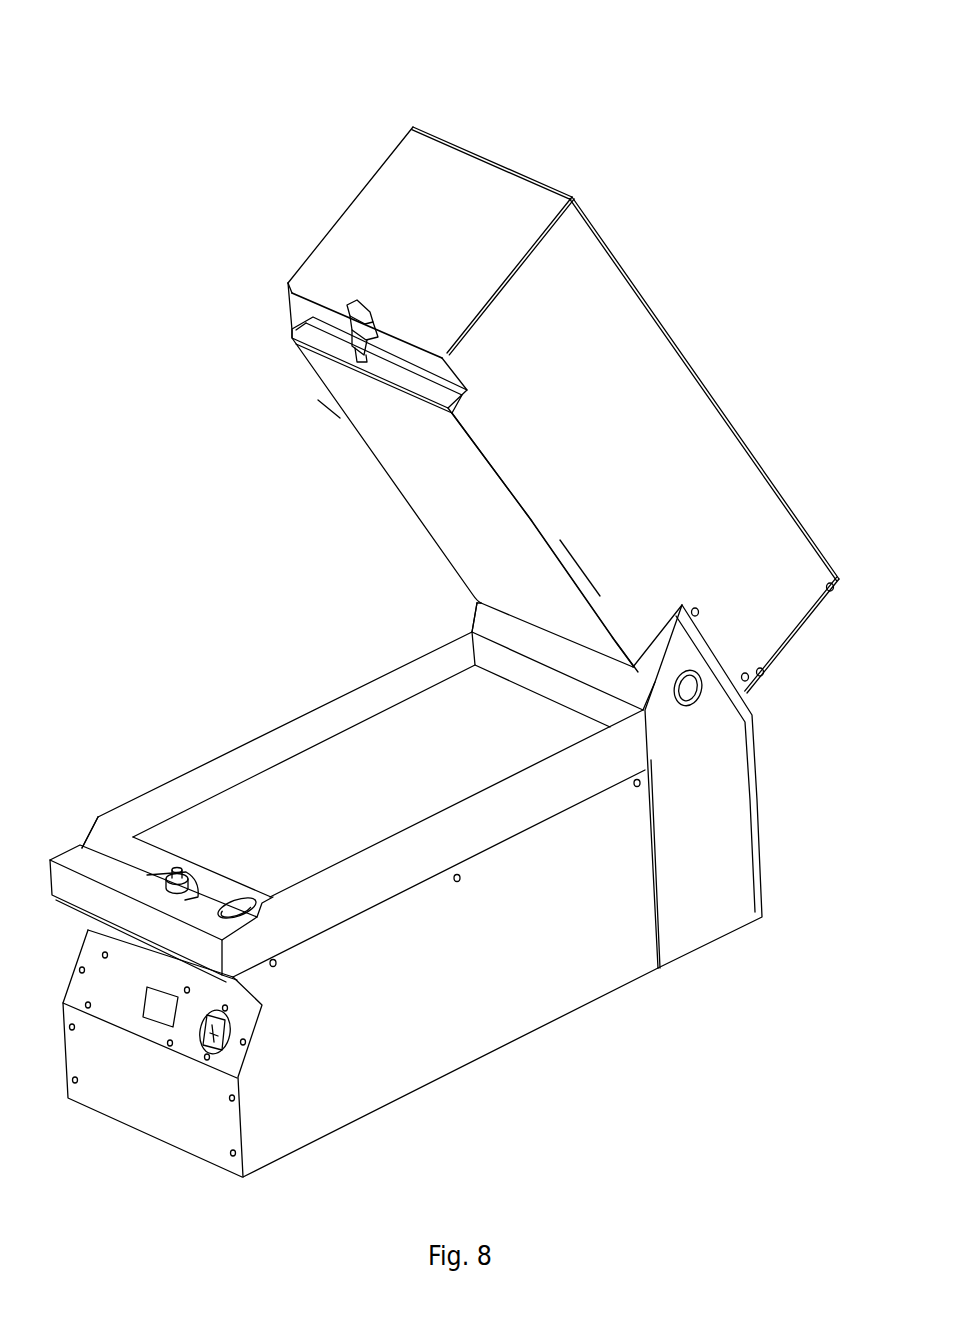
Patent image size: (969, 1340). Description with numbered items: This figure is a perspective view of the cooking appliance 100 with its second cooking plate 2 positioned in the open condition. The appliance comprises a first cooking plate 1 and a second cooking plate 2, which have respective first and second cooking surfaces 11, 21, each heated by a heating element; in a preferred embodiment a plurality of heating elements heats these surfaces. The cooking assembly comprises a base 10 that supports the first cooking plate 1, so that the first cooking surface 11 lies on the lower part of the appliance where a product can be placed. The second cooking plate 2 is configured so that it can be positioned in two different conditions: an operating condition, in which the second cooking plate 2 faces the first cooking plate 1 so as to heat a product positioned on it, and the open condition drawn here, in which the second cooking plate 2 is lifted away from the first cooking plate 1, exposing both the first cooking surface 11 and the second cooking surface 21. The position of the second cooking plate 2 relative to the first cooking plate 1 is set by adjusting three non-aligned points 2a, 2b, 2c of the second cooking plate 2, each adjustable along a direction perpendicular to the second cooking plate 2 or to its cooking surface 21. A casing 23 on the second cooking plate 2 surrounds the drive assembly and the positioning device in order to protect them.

The cooking appliance 100 is at (205, 102).
The first cooking plate 1 is at (353, 775).
The base 10 is at (480, 1040).
The first cooking surface 11 is at (250, 828).
The second cooking plate 2 is at (410, 480).
The non-aligned point of the second cooking plate 2a is at (537, 605).
The non-aligned point of the second cooking plate 2b is at (410, 438).
The non-aligned point of the second cooking plate 2c is at (472, 570).
The second cooking surface 21 is at (357, 407).
The casing 23 is at (357, 247).